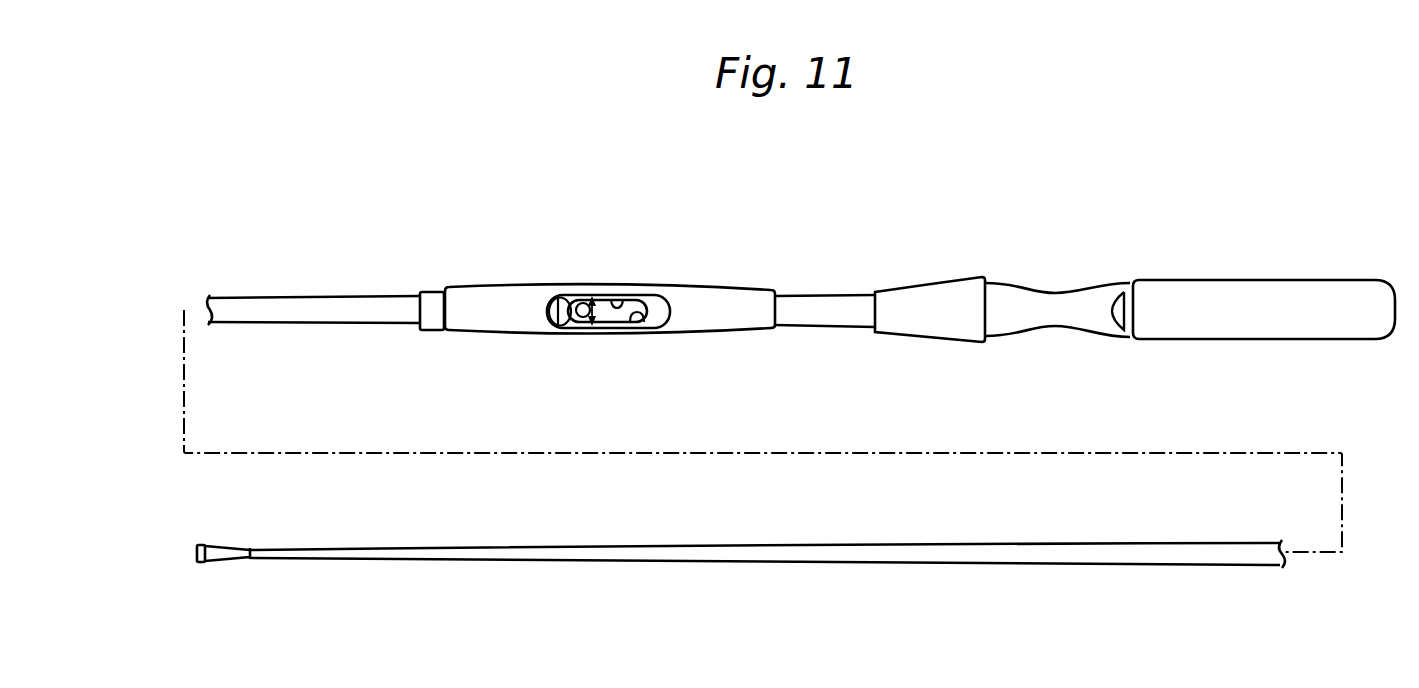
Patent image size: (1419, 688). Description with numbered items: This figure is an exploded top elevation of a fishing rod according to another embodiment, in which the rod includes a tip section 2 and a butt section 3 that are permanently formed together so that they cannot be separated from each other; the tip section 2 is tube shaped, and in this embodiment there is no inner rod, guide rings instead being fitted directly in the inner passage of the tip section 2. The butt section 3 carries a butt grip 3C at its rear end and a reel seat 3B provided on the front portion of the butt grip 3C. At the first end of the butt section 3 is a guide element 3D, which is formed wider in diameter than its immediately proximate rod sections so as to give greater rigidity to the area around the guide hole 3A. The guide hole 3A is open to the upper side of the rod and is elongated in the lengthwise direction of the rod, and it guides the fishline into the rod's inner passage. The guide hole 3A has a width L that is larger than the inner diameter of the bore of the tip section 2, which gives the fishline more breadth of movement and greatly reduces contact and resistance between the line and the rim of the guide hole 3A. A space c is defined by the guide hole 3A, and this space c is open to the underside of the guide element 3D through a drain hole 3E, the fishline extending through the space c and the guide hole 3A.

The tip section 2 is at (335, 298).
The butt section 3 is at (765, 291).
The guide hole 3A is at (614, 300).
The reel seat 3B is at (1058, 291).
The butt grip 3C is at (1245, 331).
The guide element 3D is at (645, 287).
The drain hole 3E is at (631, 324).
The width of the guide hole L is at (578, 296).
The space c is at (655, 305).